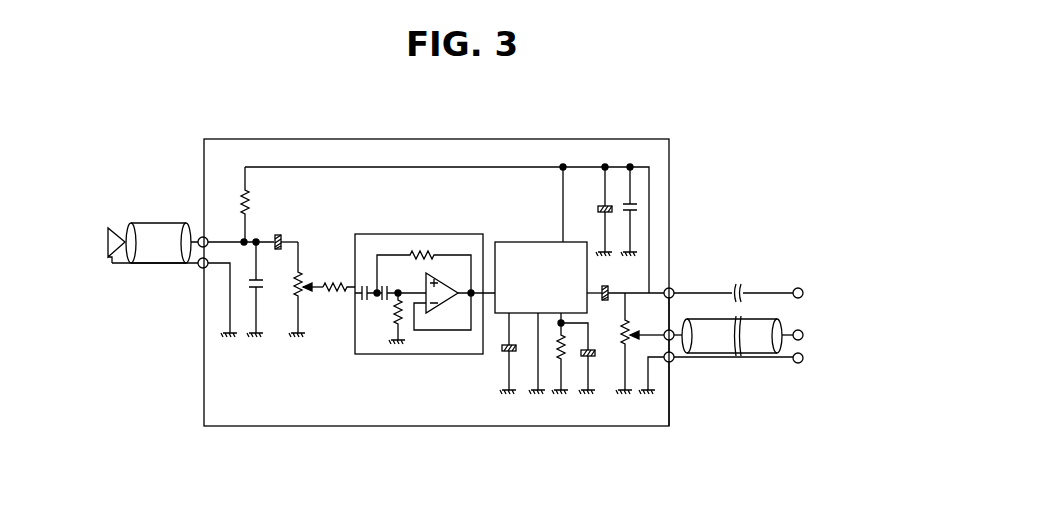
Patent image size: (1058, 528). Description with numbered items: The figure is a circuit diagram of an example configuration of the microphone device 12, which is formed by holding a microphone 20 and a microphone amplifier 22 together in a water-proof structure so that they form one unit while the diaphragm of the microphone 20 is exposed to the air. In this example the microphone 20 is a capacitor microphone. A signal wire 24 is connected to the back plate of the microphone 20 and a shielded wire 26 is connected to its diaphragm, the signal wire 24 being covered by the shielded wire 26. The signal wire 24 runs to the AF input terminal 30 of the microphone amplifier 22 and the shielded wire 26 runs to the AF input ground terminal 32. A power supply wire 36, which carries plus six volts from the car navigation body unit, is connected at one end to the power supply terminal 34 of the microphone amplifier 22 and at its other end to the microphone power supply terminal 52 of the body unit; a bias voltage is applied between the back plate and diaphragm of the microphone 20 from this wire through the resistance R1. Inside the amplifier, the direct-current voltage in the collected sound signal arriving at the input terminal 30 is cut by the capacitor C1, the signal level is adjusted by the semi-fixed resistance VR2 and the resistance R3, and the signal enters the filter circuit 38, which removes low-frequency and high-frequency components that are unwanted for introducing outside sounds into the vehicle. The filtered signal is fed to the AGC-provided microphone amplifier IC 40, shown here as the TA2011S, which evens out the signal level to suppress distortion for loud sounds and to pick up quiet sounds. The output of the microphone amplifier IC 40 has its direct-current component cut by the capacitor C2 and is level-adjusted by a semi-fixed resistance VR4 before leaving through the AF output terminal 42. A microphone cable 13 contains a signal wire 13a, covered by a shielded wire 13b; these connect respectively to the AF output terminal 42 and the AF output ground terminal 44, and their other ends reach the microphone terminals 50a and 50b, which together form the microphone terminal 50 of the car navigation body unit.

The microphone device 12 is at (680, 101).
The microphone cable 13 is at (728, 380).
The signal wire 13a is at (684, 344).
The shielded wire 13b is at (717, 346).
The microphone 20 is at (103, 230).
The microphone amplifier 22 is at (428, 138).
The signal wire 24 is at (124, 240).
The shielded wire 26 is at (155, 240).
The AF input terminal 30 is at (199, 234).
The AF input ground terminal 32 is at (200, 272).
The power supply terminal 34 is at (674, 288).
The power supply wire 36 is at (708, 290).
The filter circuit 38 is at (417, 233).
The microphone amplifier IC 40 is at (528, 241).
The AF output terminal 42 is at (673, 331).
The AF output ground terminal 44 is at (673, 362).
The microphone terminal 50 is at (777, 346).
The microphone terminal 50a is at (803, 335).
The microphone terminal 50b is at (803, 358).
The microphone power supply terminal 52 is at (801, 288).
The resistance R1 is at (246, 206).
The capacitor C1 is at (282, 234).
The semi-fixed resistance VR2 is at (304, 283).
The resistance R3 is at (333, 296).
The capacitor C2 is at (604, 290).
The variable resistor VR4 is at (631, 326).